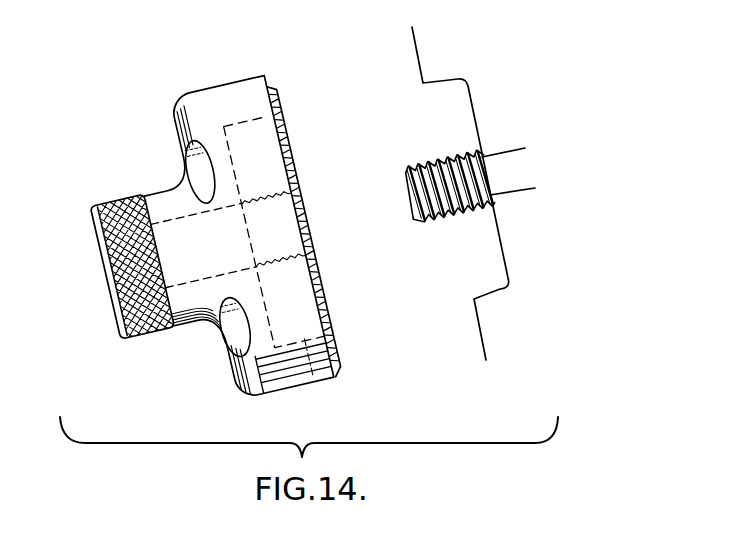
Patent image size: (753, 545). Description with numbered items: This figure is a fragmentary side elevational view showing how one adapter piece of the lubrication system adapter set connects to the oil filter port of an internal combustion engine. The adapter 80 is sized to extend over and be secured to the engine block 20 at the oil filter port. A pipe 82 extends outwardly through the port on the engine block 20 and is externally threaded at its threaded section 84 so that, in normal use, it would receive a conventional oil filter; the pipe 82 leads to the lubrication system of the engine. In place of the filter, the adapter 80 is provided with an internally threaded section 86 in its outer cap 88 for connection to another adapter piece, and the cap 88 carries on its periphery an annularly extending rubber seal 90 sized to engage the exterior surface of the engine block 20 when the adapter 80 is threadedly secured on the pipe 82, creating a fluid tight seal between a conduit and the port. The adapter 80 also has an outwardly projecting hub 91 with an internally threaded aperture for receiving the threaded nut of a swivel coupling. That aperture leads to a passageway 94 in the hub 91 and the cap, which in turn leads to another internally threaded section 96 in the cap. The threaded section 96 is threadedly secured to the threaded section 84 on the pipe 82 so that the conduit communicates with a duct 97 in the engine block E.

The adapter 80 is at (168, 118).
The outer cap 88 is at (243, 83).
The rubber seal 90 is at (277, 101).
The hub 91 is at (132, 200).
The passageway 94 is at (216, 328).
The internally threaded section 86 is at (307, 394).
The internally threaded section 96 is at (292, 247).
The engine block 20 is at (412, 38).
The pipe 82 is at (402, 187).
The externally threaded section 84 is at (448, 222).
The duct 97 is at (495, 158).
The engine block E is at (476, 322).